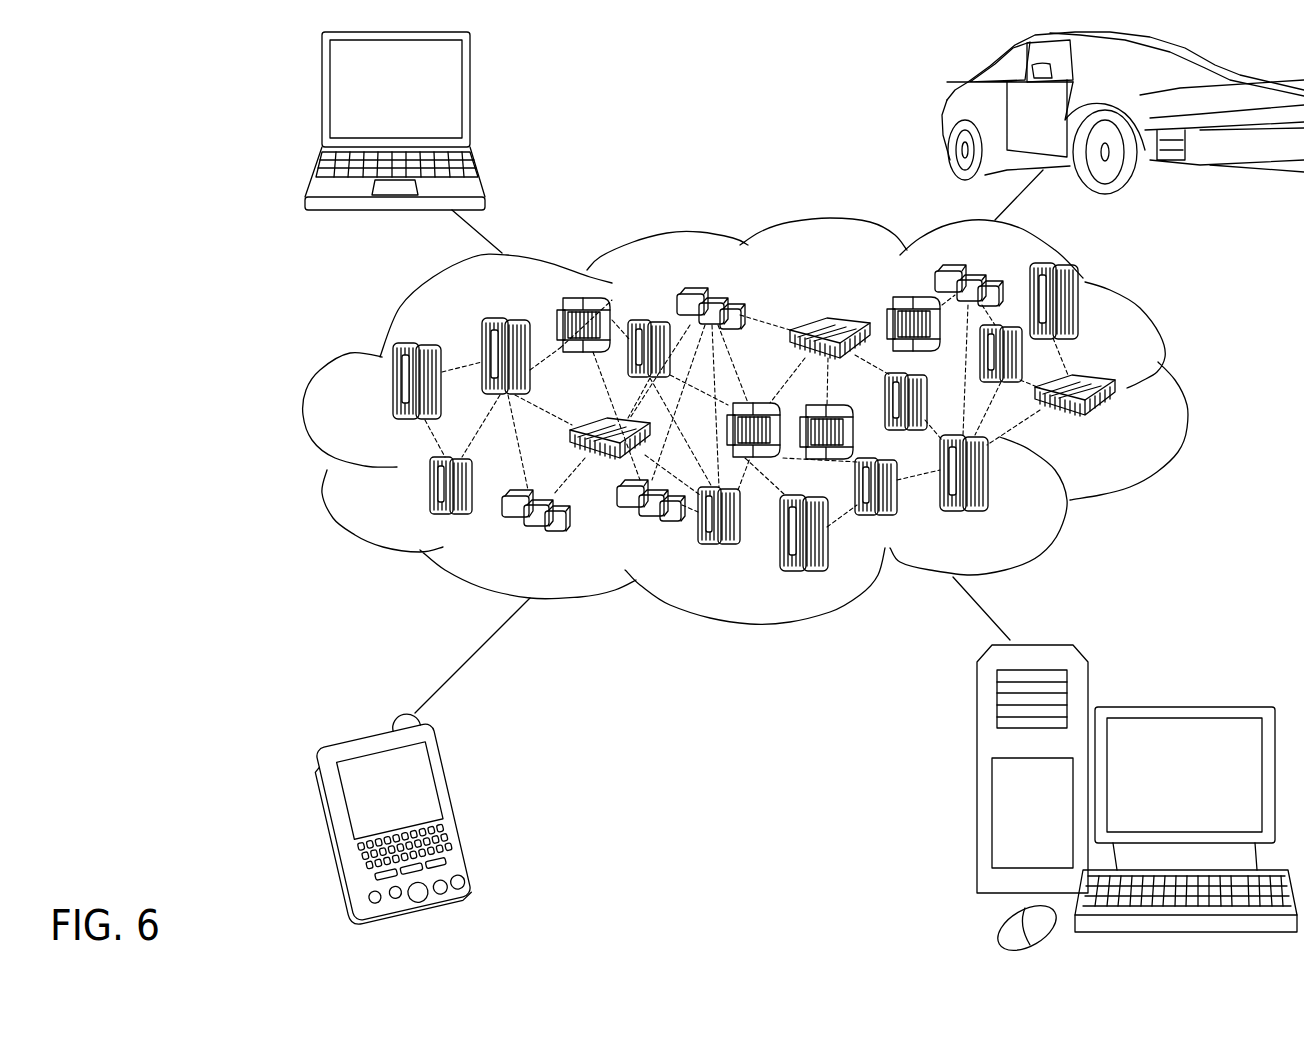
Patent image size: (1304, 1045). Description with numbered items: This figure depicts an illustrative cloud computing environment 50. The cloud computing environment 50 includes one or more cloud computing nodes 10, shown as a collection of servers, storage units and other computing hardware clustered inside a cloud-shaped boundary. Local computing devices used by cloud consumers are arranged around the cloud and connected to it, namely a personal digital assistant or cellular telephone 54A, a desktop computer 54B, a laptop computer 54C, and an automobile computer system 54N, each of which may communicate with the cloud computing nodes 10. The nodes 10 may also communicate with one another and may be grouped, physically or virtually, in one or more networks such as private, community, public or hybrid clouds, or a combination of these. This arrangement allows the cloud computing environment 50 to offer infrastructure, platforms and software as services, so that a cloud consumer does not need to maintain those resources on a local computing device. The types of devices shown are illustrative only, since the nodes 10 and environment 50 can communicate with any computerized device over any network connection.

The cloud computing environment 50 is at (773, 421).
The cloud computing node 10 is at (1122, 426).
The personal digital assistant or cellular telephone 54A is at (460, 807).
The desktop computer 54B is at (1181, 703).
The laptop computer 54C is at (470, 97).
The automobile computer system 54N is at (945, 117).